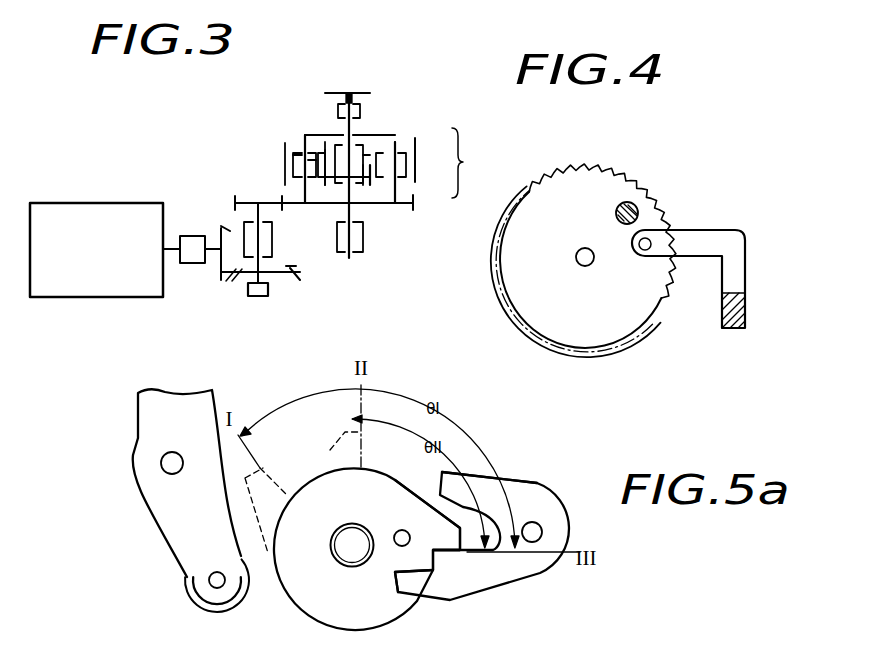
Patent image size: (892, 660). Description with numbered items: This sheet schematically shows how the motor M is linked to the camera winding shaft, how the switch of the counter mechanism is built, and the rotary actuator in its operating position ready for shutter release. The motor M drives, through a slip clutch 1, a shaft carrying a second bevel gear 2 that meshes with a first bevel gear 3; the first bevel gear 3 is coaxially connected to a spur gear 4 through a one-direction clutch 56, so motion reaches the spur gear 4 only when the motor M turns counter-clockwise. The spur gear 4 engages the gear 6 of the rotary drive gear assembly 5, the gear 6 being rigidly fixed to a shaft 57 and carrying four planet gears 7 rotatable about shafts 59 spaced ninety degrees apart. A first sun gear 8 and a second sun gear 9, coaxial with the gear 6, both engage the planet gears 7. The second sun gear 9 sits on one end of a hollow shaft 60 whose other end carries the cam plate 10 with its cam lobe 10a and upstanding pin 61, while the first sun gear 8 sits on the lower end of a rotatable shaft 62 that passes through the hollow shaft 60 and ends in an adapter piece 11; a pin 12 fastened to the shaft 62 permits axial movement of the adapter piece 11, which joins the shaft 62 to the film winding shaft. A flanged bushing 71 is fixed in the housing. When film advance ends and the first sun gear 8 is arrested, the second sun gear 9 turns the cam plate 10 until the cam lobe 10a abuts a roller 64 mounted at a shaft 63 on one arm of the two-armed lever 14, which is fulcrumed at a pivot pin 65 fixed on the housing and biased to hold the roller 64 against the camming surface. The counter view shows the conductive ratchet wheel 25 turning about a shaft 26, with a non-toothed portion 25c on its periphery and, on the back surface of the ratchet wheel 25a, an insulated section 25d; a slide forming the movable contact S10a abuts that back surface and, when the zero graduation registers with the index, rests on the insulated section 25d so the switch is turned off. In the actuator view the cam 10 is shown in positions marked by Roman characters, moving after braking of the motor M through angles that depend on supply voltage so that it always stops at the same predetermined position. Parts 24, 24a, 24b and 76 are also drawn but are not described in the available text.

In FIG. 3, the motor M is at (78, 205).
In FIG. 3, the slip clutch 1 is at (188, 238).
In FIG. 3, the second bevel gear 2 is at (220, 226).
In FIG. 3, the first bevel gear 3 is at (283, 278).
In FIG. 3, the spur gear 4 is at (240, 200).
In FIG. 3, the rotary drive gear assembly 5 is at (463, 163).
In FIG. 3, the gear 6 is at (420, 204).
In FIG. 3, the planet gears 7 is at (282, 153).
In FIG. 3, the first sun gear 8 is at (349, 216).
In FIG. 3, the second sun gear 9 is at (342, 188).
In FIG. 3, the cam plate 10 is at (371, 137).
In FIG. 5a, the cam plate 10 is at (318, 602).
In FIG. 3, the cam lobe 10a is at (319, 133).
In FIG. 5a, the cam lobe 10a is at (448, 543).
In FIG. 3, the adapter piece 11 is at (361, 93).
In FIG. 3, the pin 12 is at (347, 93).
In FIG. 3, the one-direction clutch 56 is at (260, 297).
In FIG. 3, the shaft 57 is at (355, 210).
In FIG. 3, the shafts 59 is at (305, 151).
In FIG. 3, the hollow shaft 60 is at (324, 190).
In FIG. 3, the pin 61 is at (326, 126).
In FIG. 5a, the pin 61 is at (403, 530).
In FIG. 3, the rotatable shaft 62 is at (367, 116).
In FIG. 3, the flanged bushing 71 is at (415, 140).
In FIG. 4, the ratchet wheel 25 is at (498, 286).
In FIG. 4, the ratchet wheel 25a is at (542, 169).
In FIG. 4, the non-toothed portion 25c is at (611, 170).
In FIG. 4, the insulated section 25d is at (640, 208).
In FIG. 4, the shaft 26 is at (585, 266).
In FIG. 4, the movable contact S10a is at (726, 280).
In FIG. 5a, the two-armed lever 14 is at (178, 512).
In FIG. 5a, the shaft 63 is at (215, 571).
In FIG. 5a, the roller 64 is at (199, 602).
In FIG. 5a, the pivot pin 65 is at (172, 453).
In FIG. 5a, the lever 24 is at (550, 495).
In FIG. 5a, the lever arm 24a is at (443, 476).
In FIG. 5a, the lever tip 24b is at (410, 601).
In FIG. 5a, the pivot pin 76 is at (535, 532).